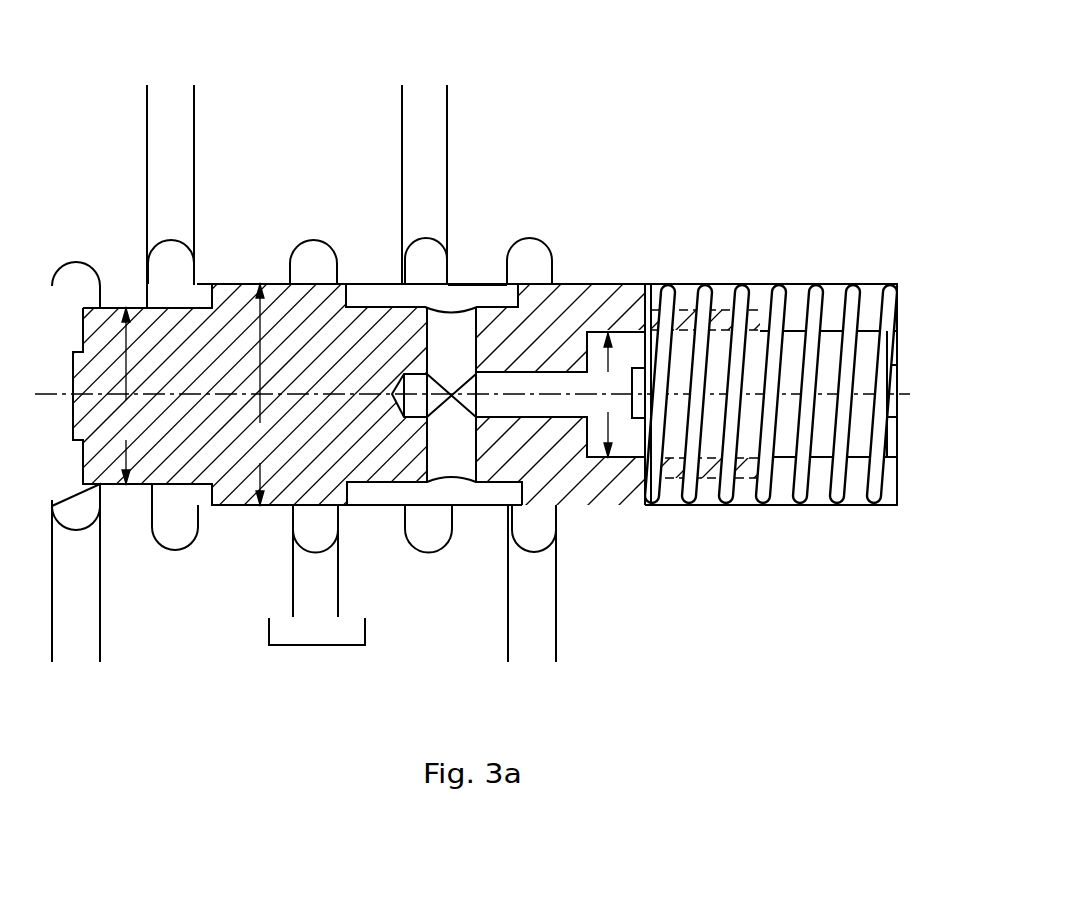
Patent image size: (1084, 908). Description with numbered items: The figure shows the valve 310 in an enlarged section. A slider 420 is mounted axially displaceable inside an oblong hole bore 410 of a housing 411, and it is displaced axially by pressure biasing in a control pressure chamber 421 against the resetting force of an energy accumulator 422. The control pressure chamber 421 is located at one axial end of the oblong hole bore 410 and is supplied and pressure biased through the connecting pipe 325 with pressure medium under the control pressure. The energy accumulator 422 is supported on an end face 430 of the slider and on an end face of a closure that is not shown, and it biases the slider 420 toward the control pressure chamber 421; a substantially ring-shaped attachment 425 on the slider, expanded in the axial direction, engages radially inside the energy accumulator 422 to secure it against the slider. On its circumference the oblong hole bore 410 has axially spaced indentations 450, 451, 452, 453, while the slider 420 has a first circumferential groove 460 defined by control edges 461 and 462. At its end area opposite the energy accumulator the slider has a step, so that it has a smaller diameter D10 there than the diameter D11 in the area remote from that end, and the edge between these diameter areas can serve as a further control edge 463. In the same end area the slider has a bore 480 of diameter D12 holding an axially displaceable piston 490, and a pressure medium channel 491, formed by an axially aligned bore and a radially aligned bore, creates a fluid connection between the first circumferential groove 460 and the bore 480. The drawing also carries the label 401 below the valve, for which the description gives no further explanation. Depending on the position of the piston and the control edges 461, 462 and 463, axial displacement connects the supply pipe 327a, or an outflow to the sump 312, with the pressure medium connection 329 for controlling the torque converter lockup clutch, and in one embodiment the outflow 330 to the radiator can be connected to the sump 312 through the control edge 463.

The valve 310 is at (632, 118).
The outflow to the radiator 330 is at (188, 108).
The pressure medium connection 329 is at (444, 112).
The control pressure chamber 421 is at (75, 270).
The connecting pipe 325 is at (93, 636).
The control edge 463 is at (196, 293).
The control edge 461 is at (353, 291).
The oblong hole bore 410 is at (372, 297).
The first circumferential groove 460 is at (490, 297).
The control edge 462 is at (519, 296).
The slider 420 is at (597, 293).
The housing 411 is at (654, 249).
The end face of the slider 430 is at (652, 292).
The energy accumulator 422 is at (815, 292).
The bore 480 is at (626, 443).
The ring-shaped attachment 425 is at (708, 473).
The piston 490 is at (853, 440).
The pressure medium channel 491 is at (546, 407).
The indentation 450 is at (172, 548).
The indentation 451 is at (300, 521).
The valve stem 401 is at (305, 572).
The sump 312 is at (365, 628).
The indentation 452 is at (415, 536).
The indentation 453 is at (548, 525).
The supply pipe 327a is at (548, 606).
The smaller diameter D10 is at (124, 396).
The diameter D11 is at (259, 394).
The diameter of the bore D12 is at (609, 395).